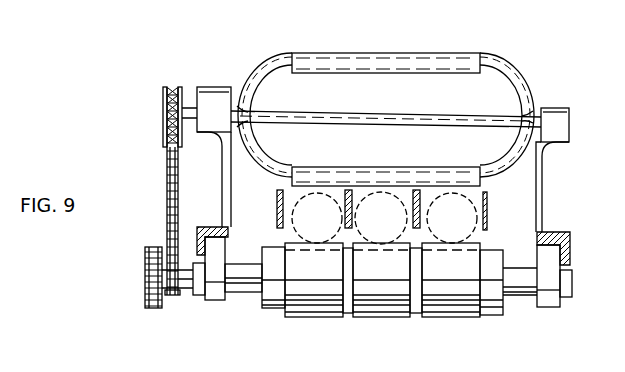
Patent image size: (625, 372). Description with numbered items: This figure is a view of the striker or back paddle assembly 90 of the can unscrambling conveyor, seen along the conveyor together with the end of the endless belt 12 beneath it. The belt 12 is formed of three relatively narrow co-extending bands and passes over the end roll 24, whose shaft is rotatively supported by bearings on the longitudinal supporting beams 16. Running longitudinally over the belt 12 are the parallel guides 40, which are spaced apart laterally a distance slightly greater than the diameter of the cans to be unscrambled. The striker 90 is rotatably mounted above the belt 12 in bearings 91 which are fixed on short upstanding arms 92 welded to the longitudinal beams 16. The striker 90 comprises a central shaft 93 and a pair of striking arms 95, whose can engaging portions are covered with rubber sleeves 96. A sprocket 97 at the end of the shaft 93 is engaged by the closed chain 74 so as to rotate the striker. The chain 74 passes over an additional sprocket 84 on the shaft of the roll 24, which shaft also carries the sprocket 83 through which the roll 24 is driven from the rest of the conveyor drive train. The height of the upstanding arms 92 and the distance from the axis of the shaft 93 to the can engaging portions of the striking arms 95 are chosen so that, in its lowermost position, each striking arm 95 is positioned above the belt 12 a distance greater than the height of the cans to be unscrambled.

The striker or back paddle assembly 90 is at (462, 48).
The bearings 91 is at (227, 89).
The upstanding arms 92 is at (223, 146).
The central shaft 93 is at (408, 114).
The striking arms 95 is at (512, 75).
The rubber sleeves 96 is at (434, 74).
The sprocket 97 is at (163, 98).
The closed chain 74 is at (167, 170).
The sprocket 83 is at (146, 280).
The sprocket 84 is at (180, 294).
The longitudinal supporting beams 16 is at (228, 232).
The end roll 24 is at (262, 306).
The endless belt 12 is at (302, 318).
The guides 40 is at (284, 215).